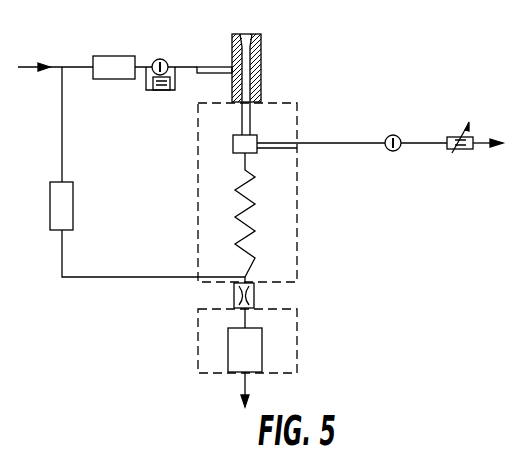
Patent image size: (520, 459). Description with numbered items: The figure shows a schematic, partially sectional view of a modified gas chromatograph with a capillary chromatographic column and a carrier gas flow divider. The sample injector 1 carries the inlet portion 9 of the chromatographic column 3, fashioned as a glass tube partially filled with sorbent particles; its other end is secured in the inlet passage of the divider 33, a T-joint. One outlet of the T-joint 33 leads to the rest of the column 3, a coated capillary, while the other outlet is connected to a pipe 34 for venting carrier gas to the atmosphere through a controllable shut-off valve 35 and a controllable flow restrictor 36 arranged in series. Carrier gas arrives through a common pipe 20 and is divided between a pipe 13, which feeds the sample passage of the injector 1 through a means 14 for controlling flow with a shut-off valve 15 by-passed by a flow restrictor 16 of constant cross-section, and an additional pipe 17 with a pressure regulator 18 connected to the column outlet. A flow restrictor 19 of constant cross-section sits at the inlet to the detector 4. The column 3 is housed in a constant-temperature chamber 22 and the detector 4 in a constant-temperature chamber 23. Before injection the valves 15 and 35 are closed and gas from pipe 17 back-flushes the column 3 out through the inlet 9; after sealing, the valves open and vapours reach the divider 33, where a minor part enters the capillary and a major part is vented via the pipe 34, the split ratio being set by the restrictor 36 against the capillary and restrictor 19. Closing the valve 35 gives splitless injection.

The sample injector 1 is at (262, 76).
The chromatographic column 3 is at (252, 224).
The detector 4 is at (262, 352).
The inlet portion of the chromatographic column 9 is at (241, 120).
The pipe for feeding carrier gas 13 is at (216, 66).
The means for controlling the flow of carrier gas 14 is at (118, 55).
The shut-off valve 15 is at (163, 59).
The flow restrictor of constant cross-section 16 is at (160, 91).
The additional pipe for feeding carrier gas 17 is at (129, 277).
The pressure regulator 18 is at (74, 213).
The flow restrictor of constant cross-section 19 is at (255, 290).
The common pipe for feeding carrier gas 20 is at (30, 69).
The constant-temperature chamber 22 is at (298, 228).
The constant-temperature chamber 23 is at (298, 343).
The divider of the flow of carrier gas 33 is at (257, 136).
The pipe for venting carrier gas 34 is at (297, 131).
The controllable shut-off valve 35 is at (396, 135).
The controllable flow restrictor 36 is at (453, 136).